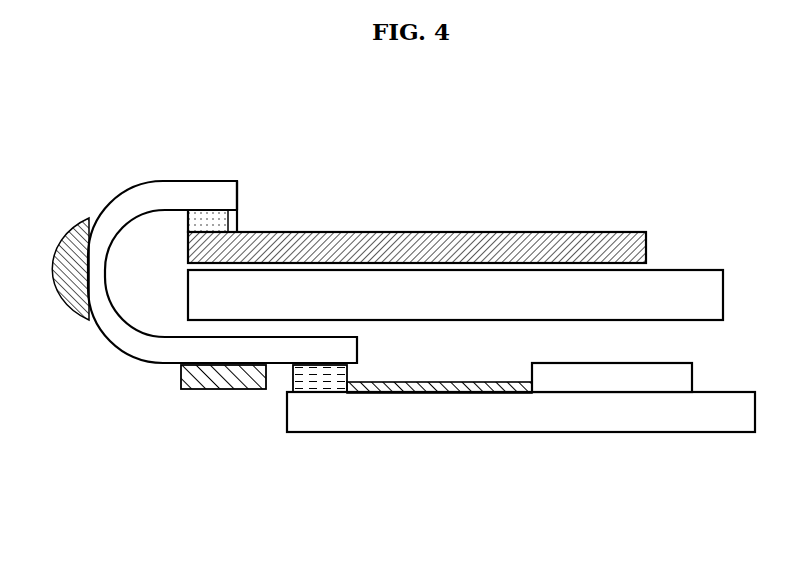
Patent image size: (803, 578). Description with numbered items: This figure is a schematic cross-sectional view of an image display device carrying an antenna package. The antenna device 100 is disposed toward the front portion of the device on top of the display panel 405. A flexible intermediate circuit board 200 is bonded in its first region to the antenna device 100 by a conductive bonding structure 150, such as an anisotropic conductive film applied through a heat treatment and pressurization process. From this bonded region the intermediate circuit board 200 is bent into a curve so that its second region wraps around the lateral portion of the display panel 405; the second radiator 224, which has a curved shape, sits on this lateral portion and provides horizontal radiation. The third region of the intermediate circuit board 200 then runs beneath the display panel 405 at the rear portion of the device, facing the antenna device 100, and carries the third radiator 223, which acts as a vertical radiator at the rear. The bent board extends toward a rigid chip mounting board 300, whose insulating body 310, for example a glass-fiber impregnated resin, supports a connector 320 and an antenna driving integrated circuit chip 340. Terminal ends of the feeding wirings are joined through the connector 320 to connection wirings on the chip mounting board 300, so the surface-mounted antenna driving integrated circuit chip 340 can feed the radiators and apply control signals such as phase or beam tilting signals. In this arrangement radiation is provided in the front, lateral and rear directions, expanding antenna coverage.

The intermediate circuit board 200 is at (181, 170).
The second radiator 224 is at (62, 306).
The conductive bonding structure 150 is at (228, 213).
The antenna device 100 is at (513, 230).
The display panel 405 is at (697, 285).
The third radiator 223 is at (226, 390).
The chip mounting board 300 is at (401, 442).
The connector 320 is at (323, 376).
The insulating body 310 is at (486, 418).
The antenna driving integrated circuit (IC) chip 340 is at (563, 378).